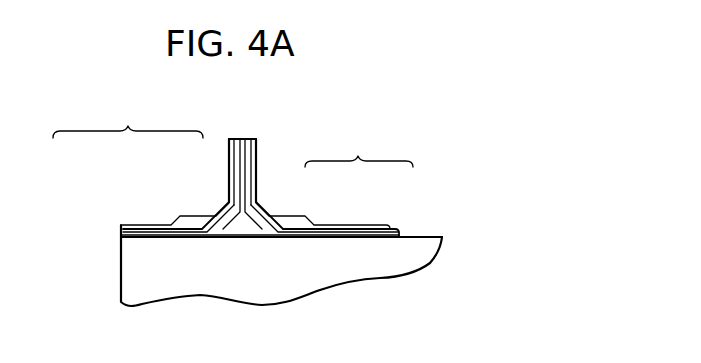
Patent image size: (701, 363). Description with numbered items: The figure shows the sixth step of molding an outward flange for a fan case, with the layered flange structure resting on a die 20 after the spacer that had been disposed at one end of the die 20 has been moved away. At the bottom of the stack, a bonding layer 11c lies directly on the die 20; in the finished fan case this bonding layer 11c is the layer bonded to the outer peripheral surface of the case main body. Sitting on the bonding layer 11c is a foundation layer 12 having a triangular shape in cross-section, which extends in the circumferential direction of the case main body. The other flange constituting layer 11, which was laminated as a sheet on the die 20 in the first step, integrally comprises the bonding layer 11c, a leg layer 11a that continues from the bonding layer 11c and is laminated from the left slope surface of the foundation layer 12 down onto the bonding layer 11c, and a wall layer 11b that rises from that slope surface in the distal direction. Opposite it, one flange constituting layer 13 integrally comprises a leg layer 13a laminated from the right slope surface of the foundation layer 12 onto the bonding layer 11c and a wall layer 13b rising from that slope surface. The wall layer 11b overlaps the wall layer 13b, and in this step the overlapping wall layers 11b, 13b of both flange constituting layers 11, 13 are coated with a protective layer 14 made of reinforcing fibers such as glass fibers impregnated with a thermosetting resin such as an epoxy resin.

The other flange constituting layer 11 is at (128, 117).
The leg layer 11a is at (163, 228).
The wall layer 11b is at (240, 163).
The bonding layer 11c is at (140, 228).
The foundation layer 12 is at (245, 237).
The one flange constituting layer 13 is at (359, 146).
The leg layer 13a is at (376, 224).
The wall layer 13b is at (257, 181).
The protective layer 14 is at (233, 188).
The die 20 is at (292, 279).